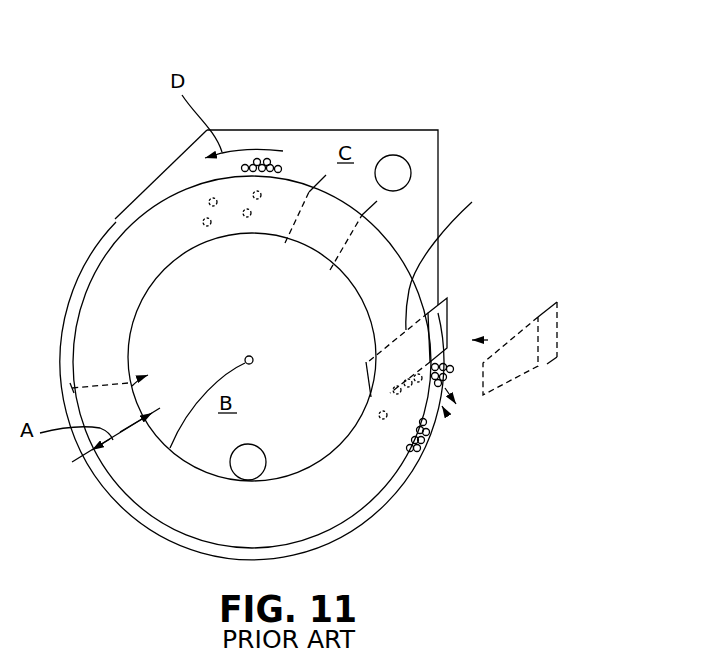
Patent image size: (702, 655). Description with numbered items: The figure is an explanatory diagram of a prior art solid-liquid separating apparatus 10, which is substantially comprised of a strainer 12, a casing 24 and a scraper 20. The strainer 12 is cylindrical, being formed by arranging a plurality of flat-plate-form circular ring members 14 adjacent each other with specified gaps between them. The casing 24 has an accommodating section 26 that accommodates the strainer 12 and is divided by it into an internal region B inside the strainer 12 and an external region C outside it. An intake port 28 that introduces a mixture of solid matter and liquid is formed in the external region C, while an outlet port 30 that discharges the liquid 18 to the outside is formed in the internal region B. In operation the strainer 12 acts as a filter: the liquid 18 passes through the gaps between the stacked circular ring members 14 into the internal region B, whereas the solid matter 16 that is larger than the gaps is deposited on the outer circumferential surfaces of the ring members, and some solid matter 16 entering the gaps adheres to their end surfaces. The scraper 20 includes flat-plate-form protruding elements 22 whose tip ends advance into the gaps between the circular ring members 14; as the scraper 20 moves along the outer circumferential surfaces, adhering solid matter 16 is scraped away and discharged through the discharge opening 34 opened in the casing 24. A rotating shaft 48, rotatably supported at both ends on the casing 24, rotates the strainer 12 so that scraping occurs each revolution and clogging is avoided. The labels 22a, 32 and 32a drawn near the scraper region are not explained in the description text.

The solid-liquid separating apparatus 10 is at (470, 57).
The strainer 12 is at (104, 211).
The circular ring members 14 is at (78, 311).
The solid matter 16 is at (209, 199).
The liquid 18 is at (279, 262).
The scraper 20 is at (464, 296).
The protruding elements 22 is at (472, 202).
The flap edge 22a is at (507, 385).
The casing 24 is at (244, 116).
The accommodating section 26 is at (379, 142).
The intake port 28 is at (397, 176).
The outlet port 30 is at (254, 466).
The flap 32 is at (547, 350).
The flap edge 32a is at (547, 364).
The discharge opening 34 is at (452, 410).
The rotating shaft 48 is at (136, 491).